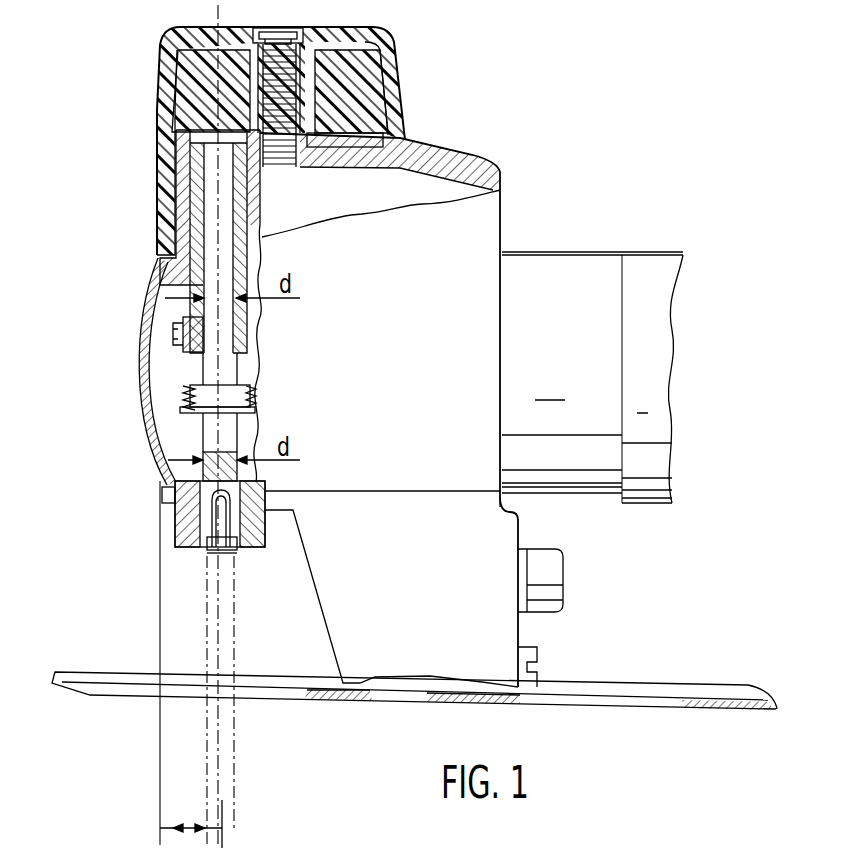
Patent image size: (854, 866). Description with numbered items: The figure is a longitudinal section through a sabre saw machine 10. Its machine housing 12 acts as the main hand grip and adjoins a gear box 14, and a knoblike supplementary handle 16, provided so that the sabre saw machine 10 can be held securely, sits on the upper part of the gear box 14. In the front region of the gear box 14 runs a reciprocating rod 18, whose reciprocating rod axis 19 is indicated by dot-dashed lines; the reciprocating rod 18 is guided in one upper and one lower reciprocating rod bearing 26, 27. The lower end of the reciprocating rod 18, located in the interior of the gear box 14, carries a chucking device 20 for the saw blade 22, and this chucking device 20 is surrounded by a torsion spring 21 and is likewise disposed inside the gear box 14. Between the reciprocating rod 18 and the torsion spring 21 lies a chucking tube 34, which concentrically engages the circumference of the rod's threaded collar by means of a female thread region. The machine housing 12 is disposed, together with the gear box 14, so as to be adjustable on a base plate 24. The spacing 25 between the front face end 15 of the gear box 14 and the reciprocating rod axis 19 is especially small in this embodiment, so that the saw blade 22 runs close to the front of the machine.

The sabre saw machine 10 is at (468, 121).
The machine housing 12 is at (643, 224).
The gear box 14 is at (157, 265).
The front face end 15 is at (160, 492).
The supplementary handle 16 is at (392, 42).
The reciprocating rod 18 is at (202, 178).
The reciprocating rod axis 19 is at (212, 96).
The chucking device 20 is at (191, 443).
The torsion spring 21 is at (197, 406).
The saw blade 22 is at (226, 765).
The base plate 24 is at (105, 672).
The spacing 25 is at (183, 826).
The upper reciprocating rod bearing 26 is at (192, 237).
The lower reciprocating rod bearing 27 is at (196, 508).
The chucking tube 34 is at (234, 424).